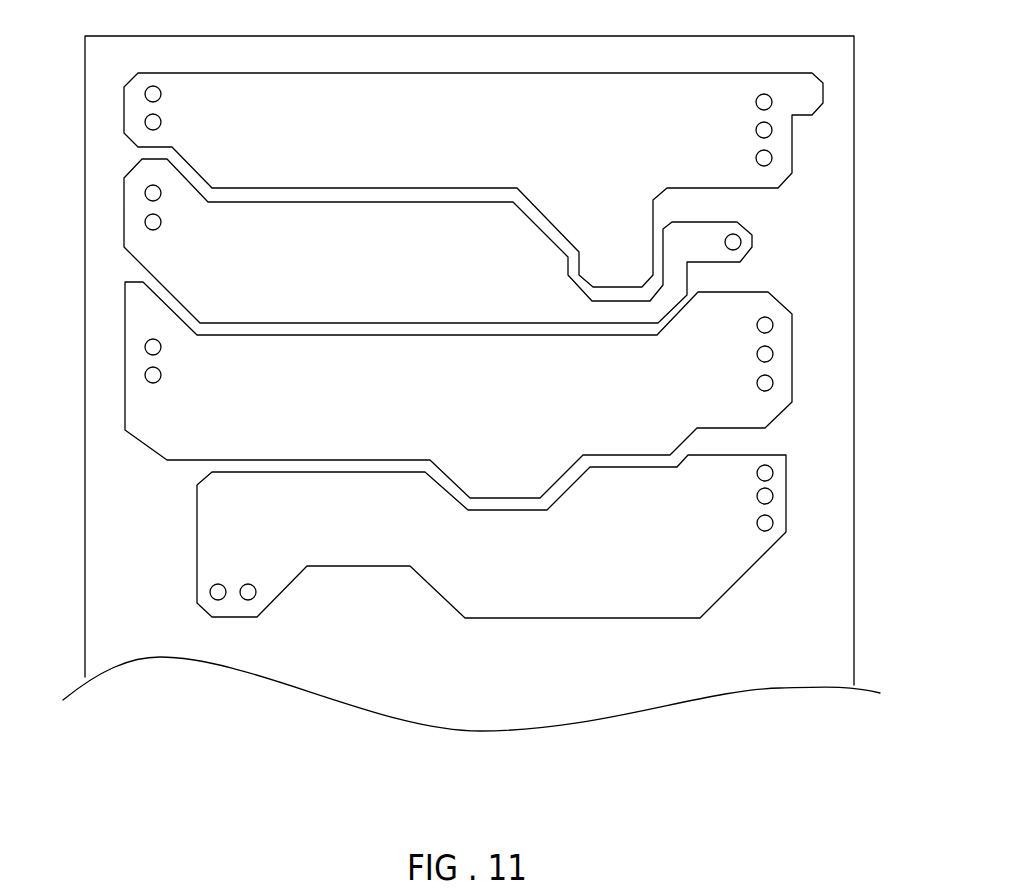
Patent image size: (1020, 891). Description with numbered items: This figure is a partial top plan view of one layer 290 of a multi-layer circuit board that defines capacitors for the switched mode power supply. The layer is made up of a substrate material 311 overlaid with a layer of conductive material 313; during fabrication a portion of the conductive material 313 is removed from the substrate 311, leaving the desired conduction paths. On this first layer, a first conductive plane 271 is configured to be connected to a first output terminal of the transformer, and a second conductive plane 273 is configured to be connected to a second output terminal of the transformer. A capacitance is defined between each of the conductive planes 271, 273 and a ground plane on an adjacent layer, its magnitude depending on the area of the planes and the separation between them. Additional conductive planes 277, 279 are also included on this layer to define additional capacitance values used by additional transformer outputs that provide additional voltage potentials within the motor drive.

The first conductive plane 271 is at (420, 150).
The second conductive plane 273 is at (420, 263).
The additional conductive plane 277 is at (420, 408).
The additional conductive plane 279 is at (422, 550).
The plate assembly sheet 290 is at (85, 358).
The substrate material 311 is at (130, 643).
The conductive material 313 is at (752, 247).